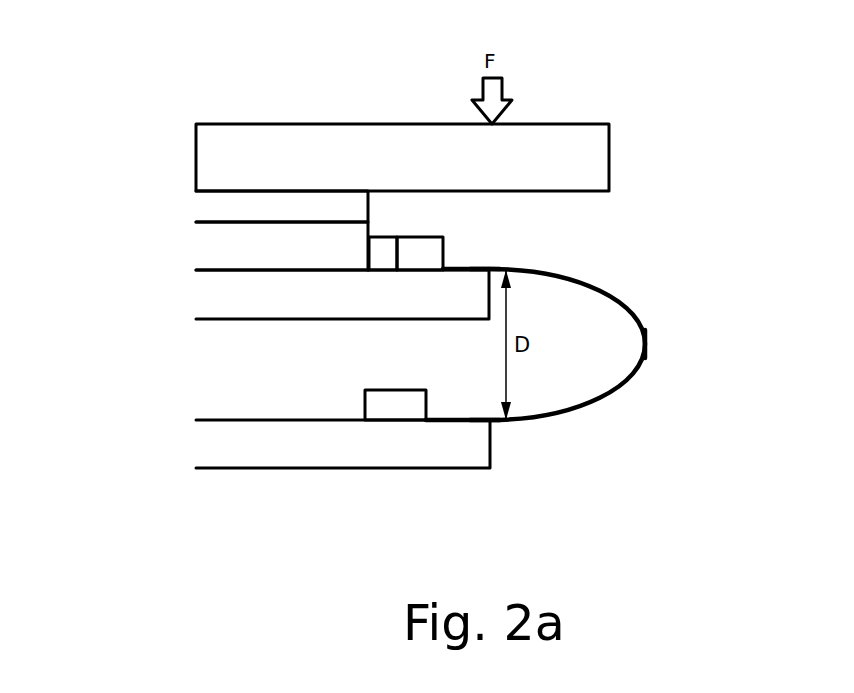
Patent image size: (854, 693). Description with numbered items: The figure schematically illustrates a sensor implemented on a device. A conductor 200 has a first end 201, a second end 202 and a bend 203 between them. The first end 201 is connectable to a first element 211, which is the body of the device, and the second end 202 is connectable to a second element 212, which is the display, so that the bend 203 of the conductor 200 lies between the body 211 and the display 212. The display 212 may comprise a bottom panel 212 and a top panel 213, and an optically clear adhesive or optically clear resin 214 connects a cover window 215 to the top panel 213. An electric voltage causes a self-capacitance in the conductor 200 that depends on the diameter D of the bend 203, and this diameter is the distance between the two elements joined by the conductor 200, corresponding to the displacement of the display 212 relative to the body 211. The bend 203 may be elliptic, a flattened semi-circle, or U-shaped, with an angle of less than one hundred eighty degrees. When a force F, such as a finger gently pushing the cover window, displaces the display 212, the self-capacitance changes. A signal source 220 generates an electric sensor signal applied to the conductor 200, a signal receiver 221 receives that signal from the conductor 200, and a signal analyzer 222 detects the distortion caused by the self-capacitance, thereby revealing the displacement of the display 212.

The conductor 200 is at (632, 303).
The first end 201 is at (493, 423).
The second end 202 is at (485, 265).
The bend 203 is at (648, 348).
The first element 211 is at (210, 452).
The second element 212 is at (220, 290).
The top panel 213 is at (220, 250).
The optically clear adhesive or optically clear resin 214 is at (220, 208).
The cover window 215 is at (220, 153).
The signal source 220 is at (392, 408).
The signal receiver 221 is at (417, 247).
The signal analyzer 222 is at (383, 253).